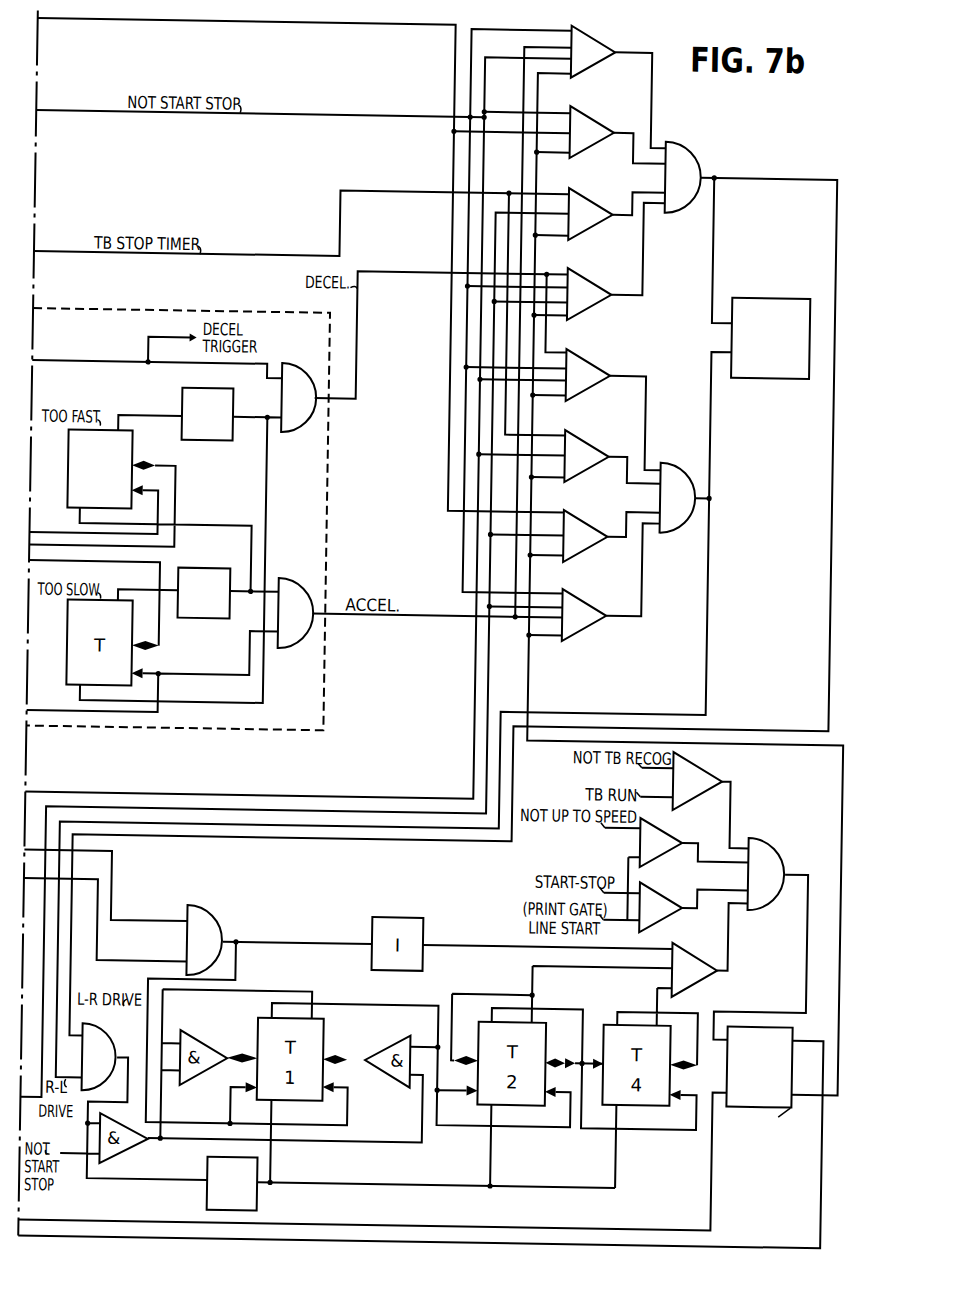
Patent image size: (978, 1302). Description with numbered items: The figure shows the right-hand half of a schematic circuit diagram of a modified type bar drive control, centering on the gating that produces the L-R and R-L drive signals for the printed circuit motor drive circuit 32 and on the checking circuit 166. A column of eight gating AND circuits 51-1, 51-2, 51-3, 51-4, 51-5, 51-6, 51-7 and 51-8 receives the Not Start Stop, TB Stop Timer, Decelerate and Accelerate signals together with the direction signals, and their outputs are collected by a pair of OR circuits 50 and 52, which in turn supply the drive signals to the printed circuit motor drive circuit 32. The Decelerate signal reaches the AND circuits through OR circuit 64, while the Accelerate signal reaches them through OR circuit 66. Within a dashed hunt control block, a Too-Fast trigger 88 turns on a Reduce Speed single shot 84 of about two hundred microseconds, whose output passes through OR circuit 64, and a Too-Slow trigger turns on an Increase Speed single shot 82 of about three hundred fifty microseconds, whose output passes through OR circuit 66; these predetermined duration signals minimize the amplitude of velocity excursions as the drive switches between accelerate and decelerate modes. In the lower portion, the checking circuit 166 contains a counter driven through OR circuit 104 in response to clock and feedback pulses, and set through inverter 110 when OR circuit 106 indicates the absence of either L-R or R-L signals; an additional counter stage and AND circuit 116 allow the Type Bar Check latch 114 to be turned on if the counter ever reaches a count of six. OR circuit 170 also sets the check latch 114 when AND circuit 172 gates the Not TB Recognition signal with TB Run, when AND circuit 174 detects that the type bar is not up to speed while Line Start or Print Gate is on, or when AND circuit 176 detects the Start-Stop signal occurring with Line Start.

The AND circuit 51-1 is at (603, 27).
The AND circuit 51-2 is at (600, 110).
The AND circuit 51-3 is at (604, 218).
The AND circuit 51-4 is at (590, 265).
The AND circuit 51-5 is at (586, 349).
The AND circuit 51-6 is at (585, 432).
The AND circuit 51-7 is at (597, 539).
The AND circuit 51-8 is at (590, 594).
The OR circuit 50 is at (692, 147).
The OR circuit 52 is at (696, 460).
The printed circuit motor drive circuit 32 is at (755, 285).
The OR circuit 64 is at (314, 360).
The Reduce Speed single shot 84 is at (224, 384).
The Too-Fast trigger 88 is at (76, 462).
The Increase Speed single shot 82 is at (215, 615).
The OR circuit 66 is at (295, 644).
The OR circuit 104 is at (228, 914).
The OR circuit 106 is at (118, 1033).
The inverter 110 is at (276, 1196).
The AND circuit 116 is at (716, 974).
The Type Bar Check latch 114 is at (809, 1015).
The checking circuit 166 is at (463, 1174).
The OR circuit 170 is at (779, 828).
The AND circuit 172 is at (712, 764).
The AND circuit 174 is at (675, 825).
The AND circuit 176 is at (685, 909).